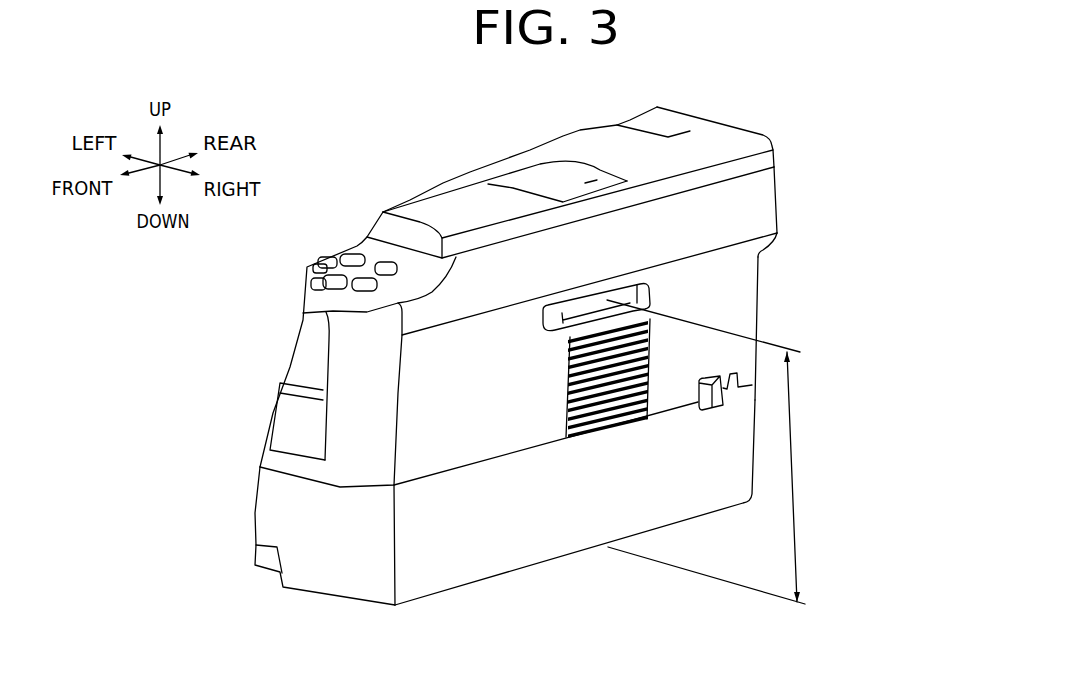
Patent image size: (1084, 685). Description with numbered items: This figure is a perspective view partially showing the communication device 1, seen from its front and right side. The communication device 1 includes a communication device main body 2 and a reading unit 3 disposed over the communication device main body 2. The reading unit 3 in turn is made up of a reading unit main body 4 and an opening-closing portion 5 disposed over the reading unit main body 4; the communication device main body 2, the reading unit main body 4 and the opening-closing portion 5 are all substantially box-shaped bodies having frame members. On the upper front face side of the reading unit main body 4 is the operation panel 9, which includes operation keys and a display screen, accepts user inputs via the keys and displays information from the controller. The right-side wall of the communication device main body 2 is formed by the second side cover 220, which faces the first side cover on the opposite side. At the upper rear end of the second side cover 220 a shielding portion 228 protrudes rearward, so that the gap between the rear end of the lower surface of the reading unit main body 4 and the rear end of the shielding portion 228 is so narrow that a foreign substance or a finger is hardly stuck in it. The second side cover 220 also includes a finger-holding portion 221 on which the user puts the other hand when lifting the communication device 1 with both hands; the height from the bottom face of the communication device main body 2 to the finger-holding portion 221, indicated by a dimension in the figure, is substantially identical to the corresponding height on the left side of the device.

The communication device 1 is at (449, 150).
The communication device main body 2 is at (764, 301).
The reading unit 3 is at (843, 130).
The reading unit main body 4 is at (782, 197).
The opening-closing portion 5 is at (779, 150).
The operation panel 9 is at (340, 257).
The second side cover 220 is at (564, 516).
The finger-holding portion 221 is at (560, 333).
The shielding portion 228 is at (779, 246).